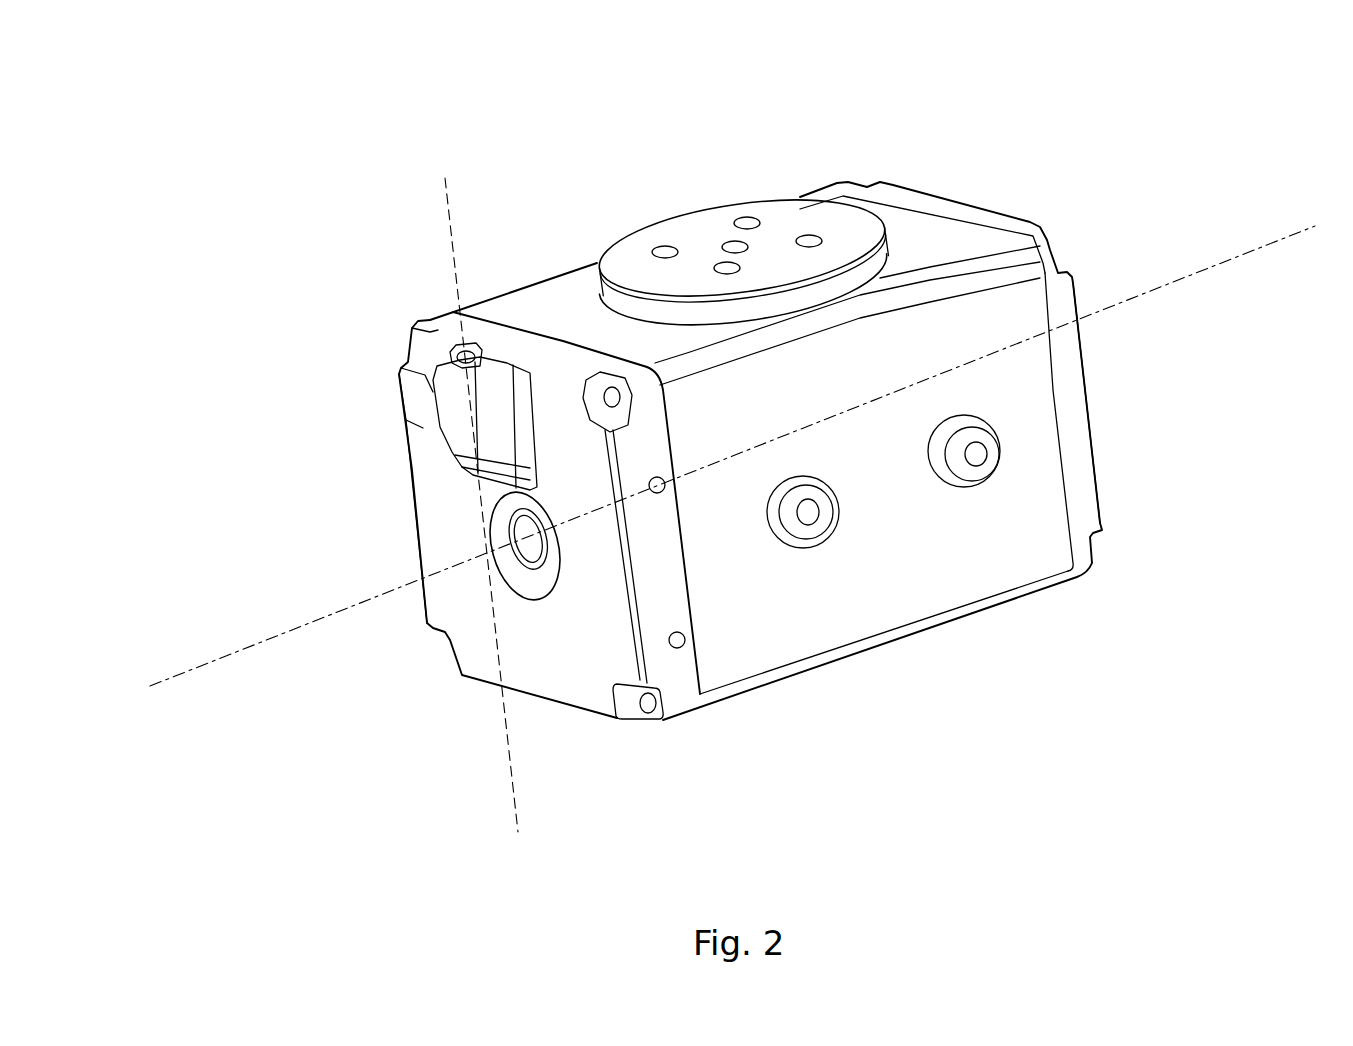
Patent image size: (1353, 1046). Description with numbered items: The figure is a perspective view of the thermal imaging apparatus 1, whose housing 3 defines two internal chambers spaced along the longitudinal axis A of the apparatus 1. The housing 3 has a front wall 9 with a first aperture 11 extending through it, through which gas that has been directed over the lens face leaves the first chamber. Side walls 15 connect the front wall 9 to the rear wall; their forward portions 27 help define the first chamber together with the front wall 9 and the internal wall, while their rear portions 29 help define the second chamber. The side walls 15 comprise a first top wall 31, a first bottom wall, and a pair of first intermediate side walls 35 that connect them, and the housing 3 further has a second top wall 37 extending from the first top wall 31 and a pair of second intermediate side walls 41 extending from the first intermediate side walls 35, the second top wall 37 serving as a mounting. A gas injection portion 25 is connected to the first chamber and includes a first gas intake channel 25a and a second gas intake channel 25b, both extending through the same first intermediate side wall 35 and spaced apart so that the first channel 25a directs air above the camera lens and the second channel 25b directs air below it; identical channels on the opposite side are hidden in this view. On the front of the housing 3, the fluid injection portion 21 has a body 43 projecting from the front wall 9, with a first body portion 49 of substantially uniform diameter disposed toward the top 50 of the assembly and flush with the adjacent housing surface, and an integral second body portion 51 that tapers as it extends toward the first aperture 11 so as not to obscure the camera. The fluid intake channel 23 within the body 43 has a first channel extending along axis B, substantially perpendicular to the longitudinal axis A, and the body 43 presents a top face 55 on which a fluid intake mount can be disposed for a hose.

The thermal imaging apparatus 1 is at (568, 213).
The housing 3 is at (912, 328).
The front wall 9 is at (423, 458).
The first aperture 11 is at (515, 530).
The side walls 15 is at (1030, 494).
The fluid injection portion 21 is at (428, 393).
The fluid intake channel 23 is at (455, 348).
The gas injection portion 25 is at (998, 540).
The first gas intake channel 25a is at (663, 492).
The second gas intake channel 25b is at (682, 647).
The forward portions of the side walls 27 is at (680, 690).
The rear portions of the side walls 29 is at (995, 302).
The first top wall 31 is at (455, 335).
The first intermediate side walls 35 is at (632, 437).
The second top wall 37 is at (888, 265).
The second intermediate side walls 41 is at (978, 448).
The body 43 is at (422, 427).
The first body portion 49 is at (463, 417).
The top 50 is at (1106, 352).
The second body portion 51 is at (473, 467).
The top face 55 is at (486, 345).
The longitudinal axis A is at (713, 472).
The axis B is at (481, 534).